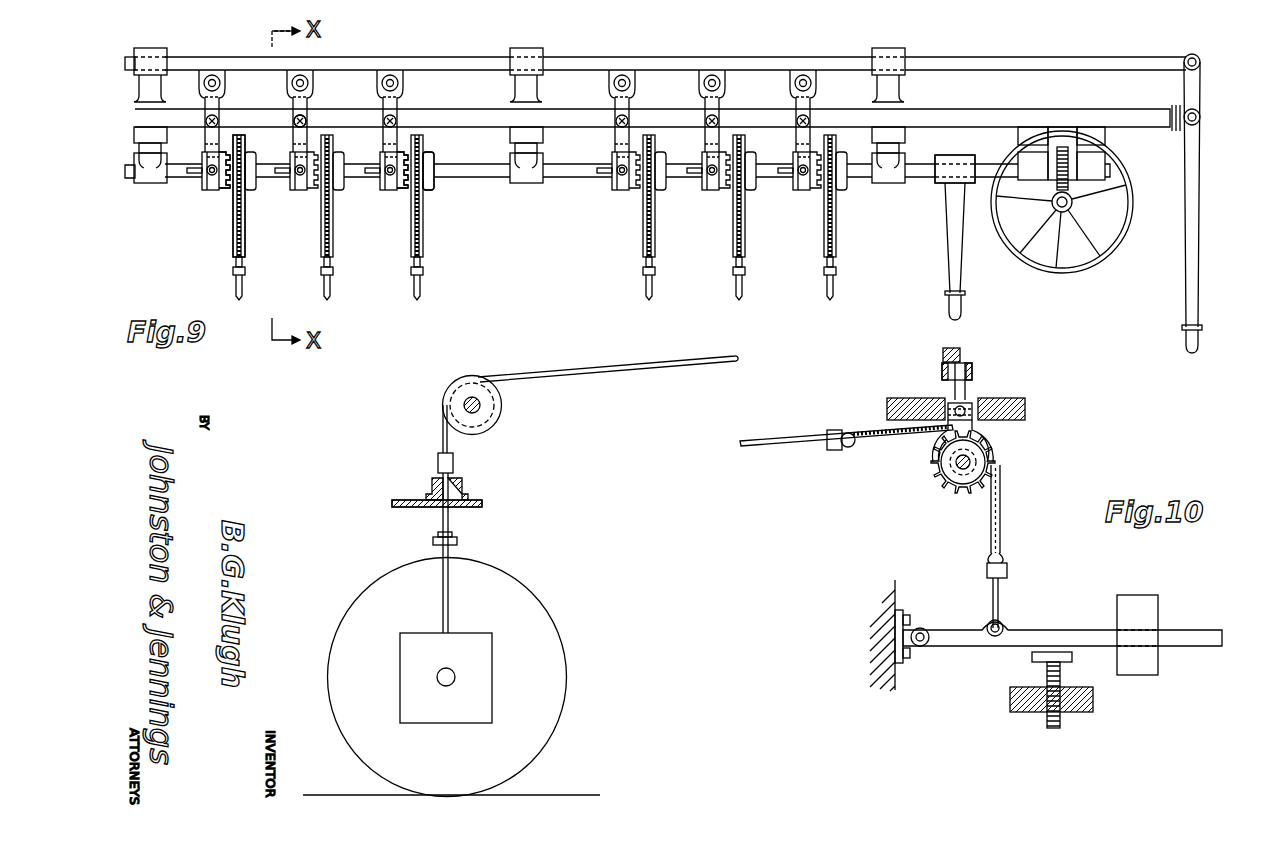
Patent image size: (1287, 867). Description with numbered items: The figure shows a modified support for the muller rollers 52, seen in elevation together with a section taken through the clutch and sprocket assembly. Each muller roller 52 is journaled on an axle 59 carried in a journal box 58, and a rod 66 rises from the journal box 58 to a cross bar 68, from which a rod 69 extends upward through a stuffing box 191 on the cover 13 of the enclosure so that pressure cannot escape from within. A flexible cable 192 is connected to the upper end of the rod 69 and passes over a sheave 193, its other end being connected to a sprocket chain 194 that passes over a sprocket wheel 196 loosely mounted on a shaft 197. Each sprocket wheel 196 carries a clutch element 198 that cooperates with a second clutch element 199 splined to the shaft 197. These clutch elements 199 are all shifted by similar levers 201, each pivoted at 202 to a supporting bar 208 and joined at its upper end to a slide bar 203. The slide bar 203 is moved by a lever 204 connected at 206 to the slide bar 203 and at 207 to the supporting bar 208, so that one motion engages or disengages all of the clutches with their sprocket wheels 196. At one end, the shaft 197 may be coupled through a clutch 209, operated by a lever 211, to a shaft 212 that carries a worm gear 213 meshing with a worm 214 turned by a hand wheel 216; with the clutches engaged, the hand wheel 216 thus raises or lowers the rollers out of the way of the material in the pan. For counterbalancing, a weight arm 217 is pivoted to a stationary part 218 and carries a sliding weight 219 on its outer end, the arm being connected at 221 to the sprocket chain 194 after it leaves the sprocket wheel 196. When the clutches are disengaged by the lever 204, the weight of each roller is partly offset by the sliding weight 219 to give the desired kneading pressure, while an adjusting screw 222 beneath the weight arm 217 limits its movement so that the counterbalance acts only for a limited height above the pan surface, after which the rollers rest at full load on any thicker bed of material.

In FIG. 9, the cover 13 is at (397, 500).
In FIG. 9, the muller roller 52 is at (533, 597).
In FIG. 9, the journal box 58 is at (487, 652).
In FIG. 9, the axle 59 is at (452, 677).
In FIG. 9, the rod 66 is at (450, 600).
In FIG. 9, the cross bar 68 is at (458, 540).
In FIG. 9, the rod 69 is at (453, 522).
In FIG. 9, the stuffing box 191 is at (460, 490).
In FIG. 9, the flexible cable 192 is at (590, 366).
In FIG. 9, the sheave 193 is at (502, 407).
In FIG. 9, the sprocket chain 194 is at (234, 250).
In FIG. 10, the sprocket chain 194 is at (893, 433).
In FIG. 9, the sprocket wheel 196 is at (428, 188).
In FIG. 10, the sprocket wheel 196 is at (933, 483).
In FIG. 9, the shaft 197 is at (589, 175).
In FIG. 10, the shaft 197 is at (965, 470).
In FIG. 9, the clutch element 198 is at (231, 190).
In FIG. 9, the second clutch element 199 is at (205, 188).
In FIG. 9, the lever 201 is at (292, 96).
In FIG. 10, the lever 201 is at (968, 387).
In FIG. 9, the pivot 202 is at (306, 120).
In FIG. 10, the pivot 202 is at (975, 400).
In FIG. 9, the slide bar 203 is at (396, 57).
In FIG. 10, the slide bar 203 is at (961, 352).
In FIG. 9, the lever 204 is at (1200, 297).
In FIG. 9, the connection 206 is at (1199, 56).
In FIG. 9, the connection 207 is at (1201, 115).
In FIG. 9, the supporting bar 208 is at (982, 109).
In FIG. 10, the supporting bar 208 is at (1027, 405).
In FIG. 9, the clutch 209 is at (944, 183).
In FIG. 9, the lever 211 is at (948, 236).
In FIG. 9, the shaft 212 is at (988, 162).
In FIG. 9, the worm gear 213 is at (1062, 148).
In FIG. 9, the worm 214 is at (1073, 205).
In FIG. 9, the hand wheel 216 is at (1100, 262).
In FIG. 10, the weight arm 217 is at (1193, 628).
In FIG. 10, the stationary part 218 is at (910, 627).
In FIG. 10, the sliding weight 219 is at (1158, 663).
In FIG. 10, the connection 221 is at (1005, 552).
In FIG. 10, the adjusting screw 222 is at (1047, 672).